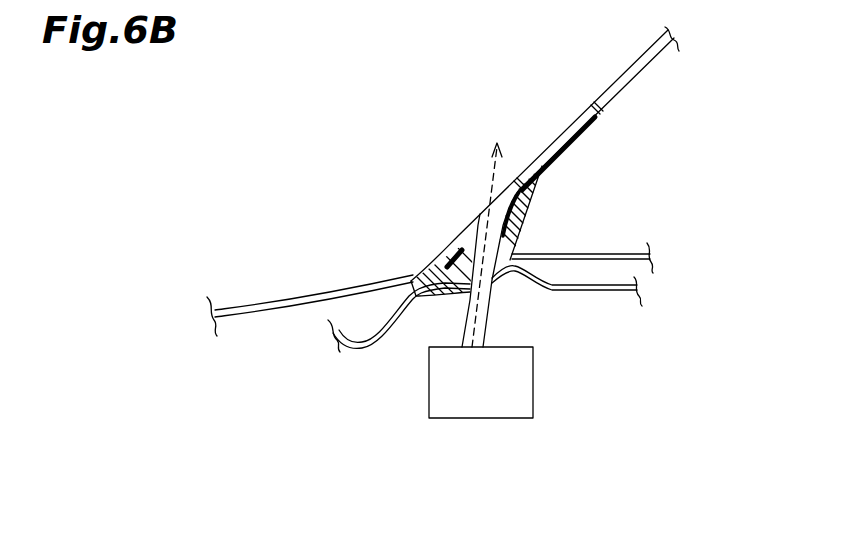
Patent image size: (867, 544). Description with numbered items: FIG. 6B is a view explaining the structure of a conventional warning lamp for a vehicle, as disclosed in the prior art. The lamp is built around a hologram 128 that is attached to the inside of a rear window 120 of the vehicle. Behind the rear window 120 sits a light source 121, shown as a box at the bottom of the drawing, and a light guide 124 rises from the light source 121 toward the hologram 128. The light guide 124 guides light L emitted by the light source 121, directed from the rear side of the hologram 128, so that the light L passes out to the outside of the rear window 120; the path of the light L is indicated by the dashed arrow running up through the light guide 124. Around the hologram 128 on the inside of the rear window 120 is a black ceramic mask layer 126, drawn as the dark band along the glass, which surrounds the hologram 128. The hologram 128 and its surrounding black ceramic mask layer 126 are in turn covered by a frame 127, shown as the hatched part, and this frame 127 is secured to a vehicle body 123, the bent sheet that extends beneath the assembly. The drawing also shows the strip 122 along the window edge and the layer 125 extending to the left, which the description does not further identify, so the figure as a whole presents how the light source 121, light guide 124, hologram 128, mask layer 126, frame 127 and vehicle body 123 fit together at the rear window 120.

The rear window 120 is at (528, 100).
The light source 121 is at (495, 420).
The blade member 122 is at (618, 70).
The vehicle body 123 is at (605, 293).
The light guide 124 is at (490, 315).
The cover sheet 125 is at (297, 293).
The black ceramic mask layer 126 is at (575, 142).
The frame 127 is at (537, 202).
The hologram 128 is at (505, 219).
The light L is at (490, 172).